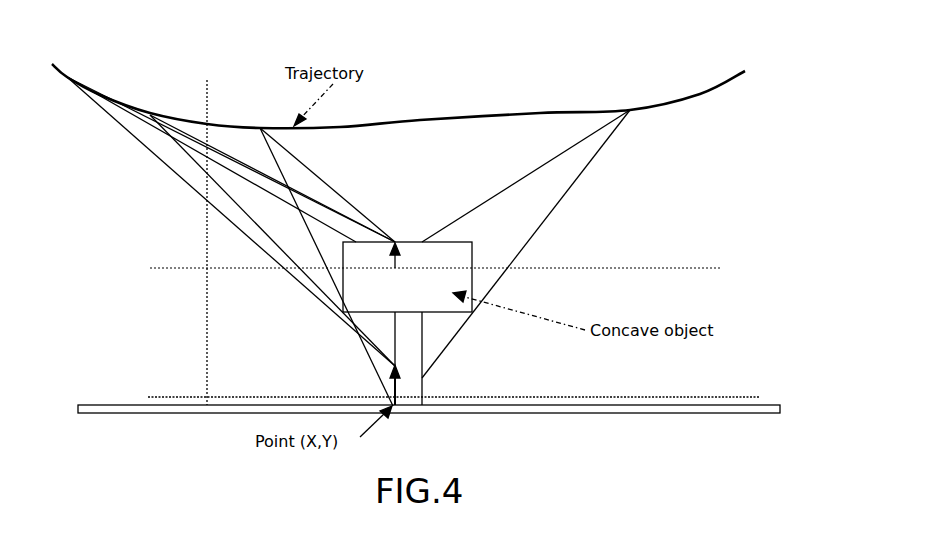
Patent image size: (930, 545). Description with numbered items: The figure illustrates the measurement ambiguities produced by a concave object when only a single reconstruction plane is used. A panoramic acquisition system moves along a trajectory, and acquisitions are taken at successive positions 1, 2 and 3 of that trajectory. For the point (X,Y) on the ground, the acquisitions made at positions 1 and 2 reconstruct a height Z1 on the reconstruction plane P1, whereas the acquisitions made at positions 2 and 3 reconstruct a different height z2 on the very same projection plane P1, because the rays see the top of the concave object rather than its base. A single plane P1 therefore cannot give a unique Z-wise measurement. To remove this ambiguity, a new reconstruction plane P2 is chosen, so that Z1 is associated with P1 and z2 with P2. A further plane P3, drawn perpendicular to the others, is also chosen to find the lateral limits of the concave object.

The position of the trajectory 1 is at (231, 211).
The position of the trajectory 2 is at (270, 228).
The position of the trajectory 3 is at (322, 253).
The reconstruction plane P1 is at (454, 386).
The reconstruction plane P2 is at (434, 257).
The reconstruction plane P3 is at (202, 232).
The reconstructed height z2 is at (400, 243).
The reconstructed height Z1 is at (405, 377).